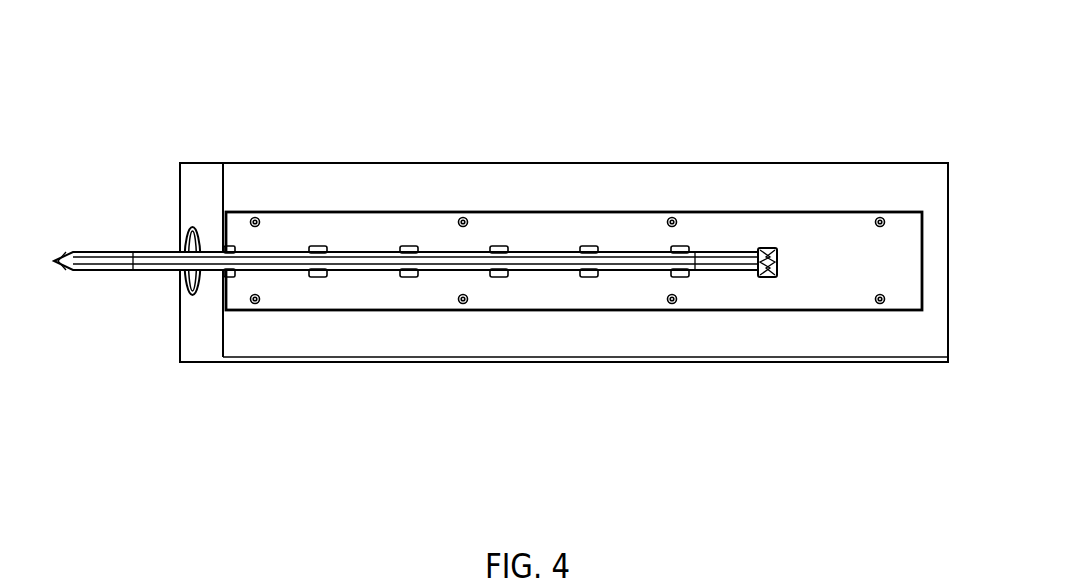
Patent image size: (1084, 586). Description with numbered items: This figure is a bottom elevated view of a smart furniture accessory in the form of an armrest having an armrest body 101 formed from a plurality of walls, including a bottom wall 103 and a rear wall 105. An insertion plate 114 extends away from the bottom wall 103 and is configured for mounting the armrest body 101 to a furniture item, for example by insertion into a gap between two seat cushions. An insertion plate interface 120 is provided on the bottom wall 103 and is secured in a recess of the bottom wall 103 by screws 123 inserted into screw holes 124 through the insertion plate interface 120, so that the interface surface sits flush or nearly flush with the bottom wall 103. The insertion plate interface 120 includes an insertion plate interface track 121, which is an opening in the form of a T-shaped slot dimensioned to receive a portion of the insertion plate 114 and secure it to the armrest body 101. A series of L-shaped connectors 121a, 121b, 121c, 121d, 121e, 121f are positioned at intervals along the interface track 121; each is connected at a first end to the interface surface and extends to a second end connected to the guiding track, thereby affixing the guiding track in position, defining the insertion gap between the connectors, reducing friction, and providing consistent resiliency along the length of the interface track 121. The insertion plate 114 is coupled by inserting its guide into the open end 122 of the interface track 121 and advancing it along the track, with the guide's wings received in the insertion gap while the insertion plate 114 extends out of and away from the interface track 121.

The armrest body 101 is at (645, 370).
The bottom wall 103 is at (929, 177).
The rear wall 105 is at (201, 192).
The insertion plate 114 is at (118, 243).
The insertion plate interface 120 is at (285, 278).
The insertion plate interface track 121 is at (550, 273).
The L-shaped connector 121a is at (318, 246).
The L-shaped connector 121b is at (409, 246).
The L-shaped connector 121c is at (500, 246).
The L-shaped connector 121d is at (590, 246).
The L-shaped connector 121e is at (683, 246).
The L-shaped connector 121f is at (767, 248).
The open end 122 is at (230, 277).
The screws 123 is at (672, 295).
The screw holes 124 is at (574, 335).